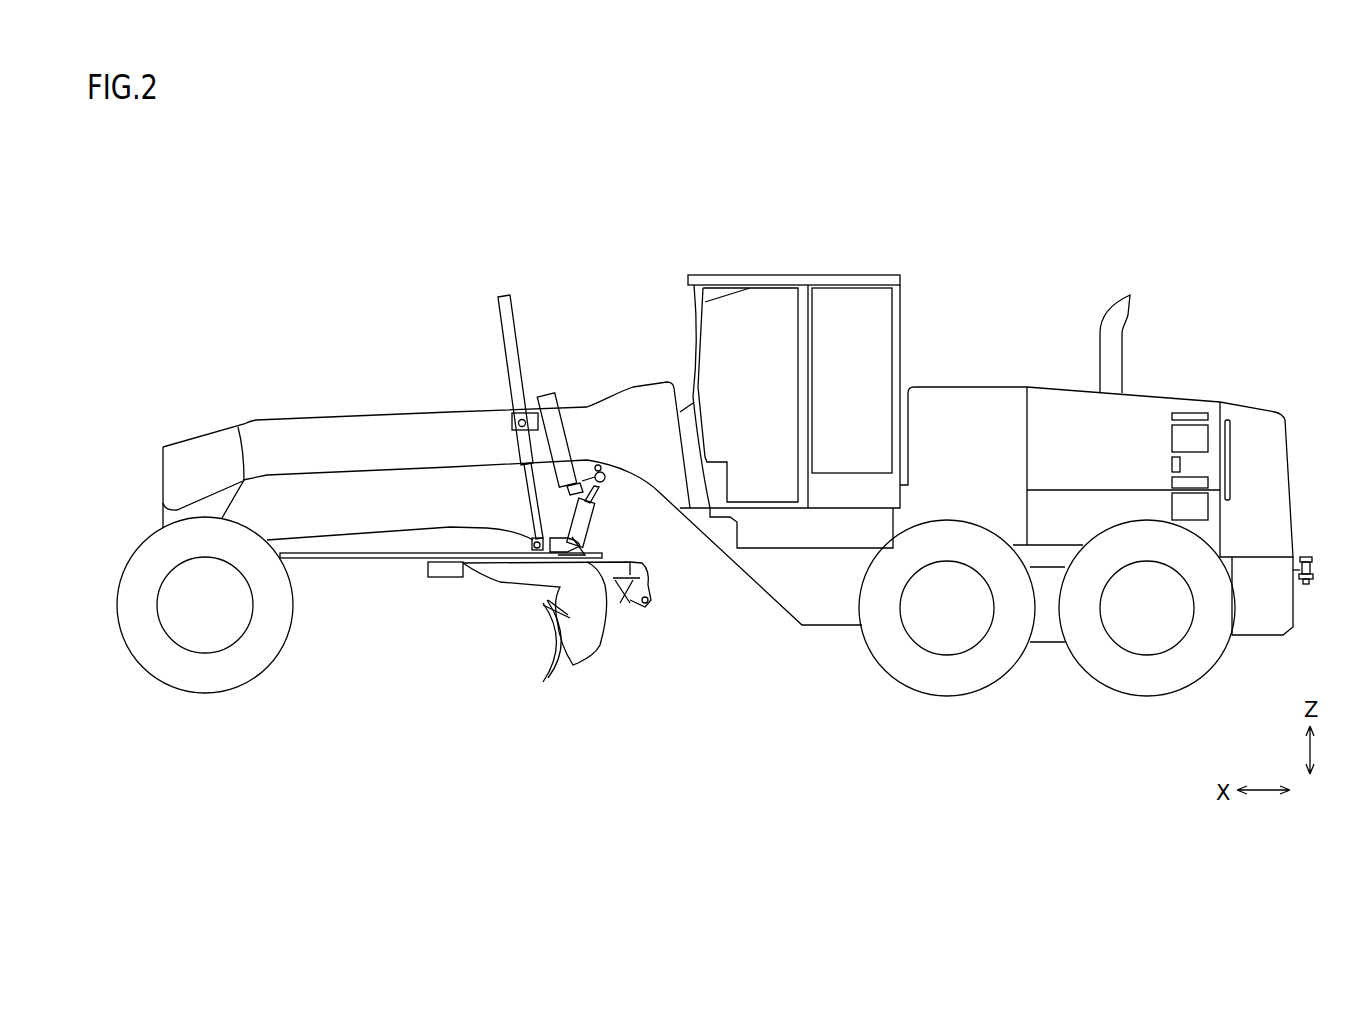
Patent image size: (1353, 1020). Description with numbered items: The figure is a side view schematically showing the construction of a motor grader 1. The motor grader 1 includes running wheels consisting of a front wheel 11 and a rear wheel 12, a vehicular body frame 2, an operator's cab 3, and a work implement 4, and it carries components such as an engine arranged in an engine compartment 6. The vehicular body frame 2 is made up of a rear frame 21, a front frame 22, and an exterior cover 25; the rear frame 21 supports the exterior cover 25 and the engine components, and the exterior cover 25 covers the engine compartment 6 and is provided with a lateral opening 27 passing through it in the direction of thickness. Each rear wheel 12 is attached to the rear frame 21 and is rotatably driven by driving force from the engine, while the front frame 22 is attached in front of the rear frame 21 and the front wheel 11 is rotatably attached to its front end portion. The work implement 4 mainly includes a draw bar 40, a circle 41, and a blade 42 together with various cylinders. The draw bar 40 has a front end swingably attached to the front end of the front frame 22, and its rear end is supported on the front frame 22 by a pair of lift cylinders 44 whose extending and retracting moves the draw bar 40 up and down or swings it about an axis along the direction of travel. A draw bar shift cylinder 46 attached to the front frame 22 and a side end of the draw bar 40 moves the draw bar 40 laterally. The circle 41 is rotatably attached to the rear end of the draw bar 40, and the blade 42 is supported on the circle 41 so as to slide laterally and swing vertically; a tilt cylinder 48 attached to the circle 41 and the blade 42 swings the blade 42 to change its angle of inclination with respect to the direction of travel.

The motor grader 1 is at (372, 220).
The vehicular body frame 2 is at (600, 342).
The operator's cab 3 is at (846, 274).
The work implement 4 is at (480, 647).
The engine compartment 6 is at (1059, 443).
The front wheel 11 is at (207, 672).
The rear wheel 12 is at (948, 675).
The rear frame 21 is at (1047, 622).
The front frame 22 is at (335, 443).
The exterior cover 25 is at (1145, 395).
The lateral opening 27 is at (1190, 437).
The draw bar 40 is at (358, 545).
The circle 41 is at (447, 569).
The blade 42 is at (553, 655).
The lift cylinder 44 is at (508, 333).
The draw bar shift cylinder 46 is at (597, 523).
The tilt cylinder 48 is at (630, 605).